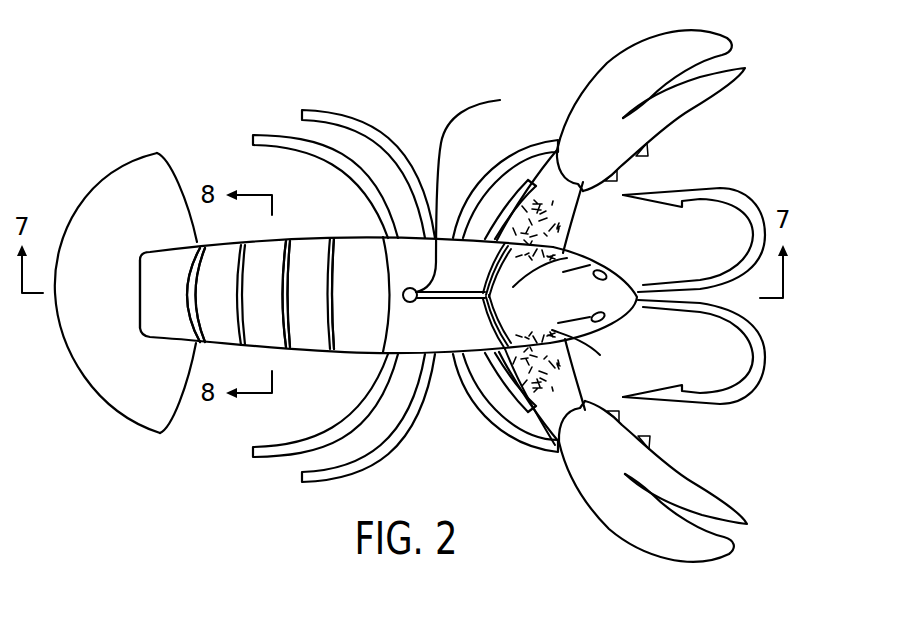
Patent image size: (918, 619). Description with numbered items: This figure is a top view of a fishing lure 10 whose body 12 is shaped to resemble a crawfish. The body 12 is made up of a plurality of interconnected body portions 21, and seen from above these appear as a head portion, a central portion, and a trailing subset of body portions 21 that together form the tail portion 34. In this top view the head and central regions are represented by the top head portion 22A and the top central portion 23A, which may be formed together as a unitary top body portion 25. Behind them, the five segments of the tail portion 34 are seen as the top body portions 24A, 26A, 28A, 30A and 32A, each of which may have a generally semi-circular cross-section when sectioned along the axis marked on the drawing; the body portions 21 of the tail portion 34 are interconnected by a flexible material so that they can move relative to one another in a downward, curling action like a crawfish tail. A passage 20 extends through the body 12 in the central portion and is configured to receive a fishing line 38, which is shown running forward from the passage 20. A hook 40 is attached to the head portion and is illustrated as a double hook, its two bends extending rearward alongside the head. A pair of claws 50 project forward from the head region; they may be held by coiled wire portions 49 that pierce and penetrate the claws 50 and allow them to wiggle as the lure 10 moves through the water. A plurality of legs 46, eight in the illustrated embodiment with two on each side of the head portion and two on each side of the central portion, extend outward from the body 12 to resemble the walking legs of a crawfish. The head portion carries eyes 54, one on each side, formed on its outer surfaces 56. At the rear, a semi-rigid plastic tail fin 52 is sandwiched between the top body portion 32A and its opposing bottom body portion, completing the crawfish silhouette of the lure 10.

The fishing lure 10 is at (768, 112).
The body 12 is at (443, 357).
The passage 20 is at (403, 298).
The body portions 21 is at (167, 332).
The top head portion 22A is at (582, 345).
The top central portion 23A is at (527, 410).
The top body portion 24A is at (350, 252).
The unitary top body portion 25 is at (567, 258).
The top body portion 26A is at (311, 240).
The top body portion 28A is at (219, 256).
The top body portion 30A is at (195, 246).
The top body portion 32A is at (157, 292).
The tail portion 34 is at (300, 237).
The fishing line 38 is at (466, 105).
The hook 40 is at (760, 373).
The legs 46 is at (283, 139).
The coiled wire portions 49 is at (547, 207).
The claws 50 is at (672, 47).
The tail fin 52 is at (118, 188).
The eyes 54 is at (607, 278).
The outer surfaces 56 is at (580, 265).